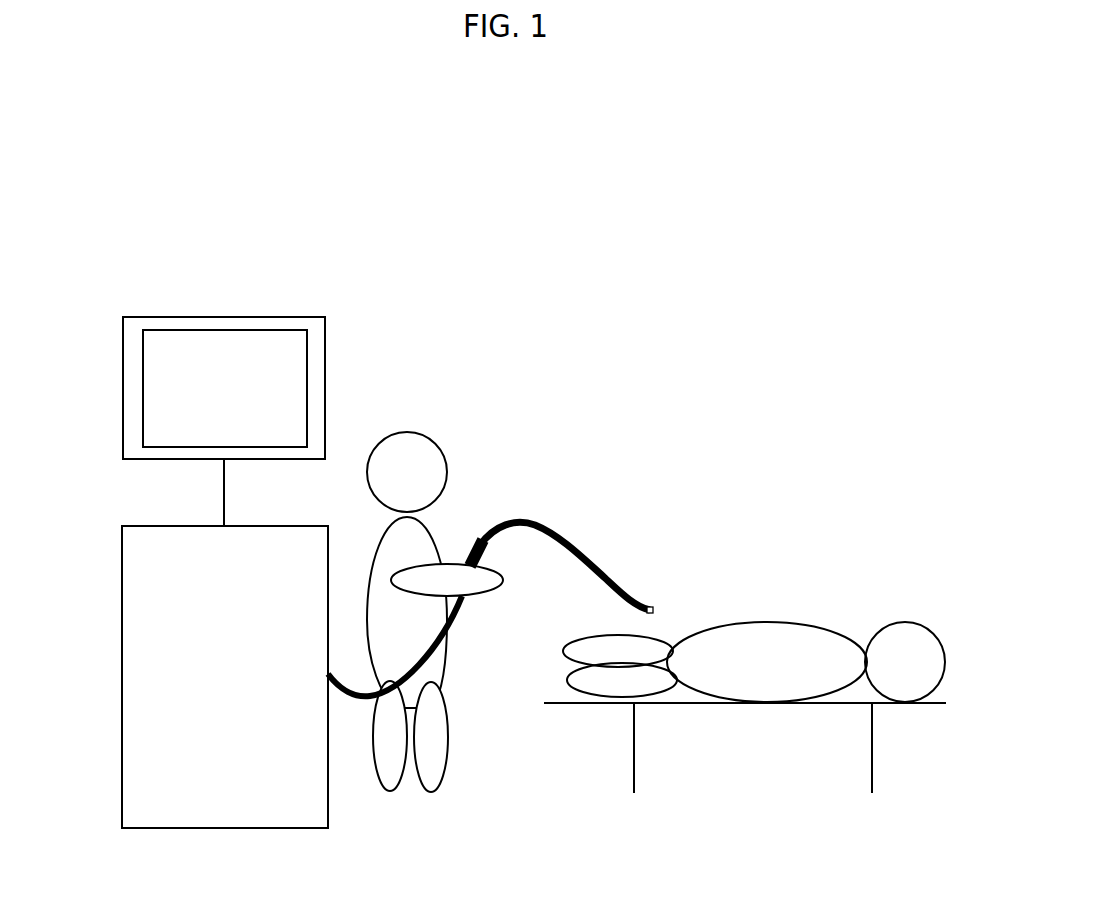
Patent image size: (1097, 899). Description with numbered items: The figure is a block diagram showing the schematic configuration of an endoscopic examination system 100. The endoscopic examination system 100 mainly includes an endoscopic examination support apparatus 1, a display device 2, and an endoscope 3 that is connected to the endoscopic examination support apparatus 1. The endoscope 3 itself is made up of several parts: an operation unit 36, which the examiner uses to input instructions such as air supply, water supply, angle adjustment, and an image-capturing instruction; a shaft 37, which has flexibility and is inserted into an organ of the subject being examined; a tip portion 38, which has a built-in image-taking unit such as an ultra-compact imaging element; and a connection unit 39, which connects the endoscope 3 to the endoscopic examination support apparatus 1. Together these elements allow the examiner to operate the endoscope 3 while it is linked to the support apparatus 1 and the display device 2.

The endoscopic examination system 100 is at (337, 167).
The endoscopic examination support apparatus 1 is at (122, 560).
The display device 2 is at (123, 353).
The endoscope 3 is at (515, 589).
The operation unit 36 is at (474, 538).
The shaft 37 is at (570, 540).
The tip portion 38 is at (650, 605).
The connection unit 39 is at (333, 687).